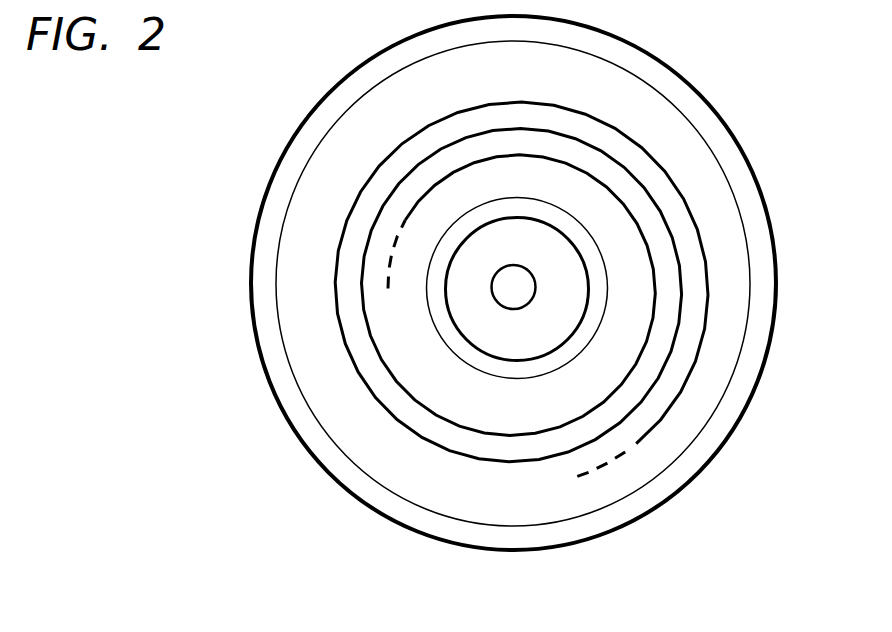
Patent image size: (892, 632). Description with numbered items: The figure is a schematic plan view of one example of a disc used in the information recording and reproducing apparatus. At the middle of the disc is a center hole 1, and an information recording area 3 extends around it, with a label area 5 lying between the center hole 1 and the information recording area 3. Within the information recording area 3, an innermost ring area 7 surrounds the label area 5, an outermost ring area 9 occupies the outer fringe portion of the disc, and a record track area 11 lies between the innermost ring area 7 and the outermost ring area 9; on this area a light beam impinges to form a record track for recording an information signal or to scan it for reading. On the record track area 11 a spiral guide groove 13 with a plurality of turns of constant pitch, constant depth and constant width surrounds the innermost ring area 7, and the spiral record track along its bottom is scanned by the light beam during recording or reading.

The center hole 1 is at (530, 279).
The information recording area 3 is at (655, 105).
The label area 5 is at (475, 253).
The innermost ring area 7 is at (587, 243).
The outermost ring area 9 is at (268, 246).
The record track area 11 is at (702, 375).
The spiral guide groove 13 is at (702, 317).